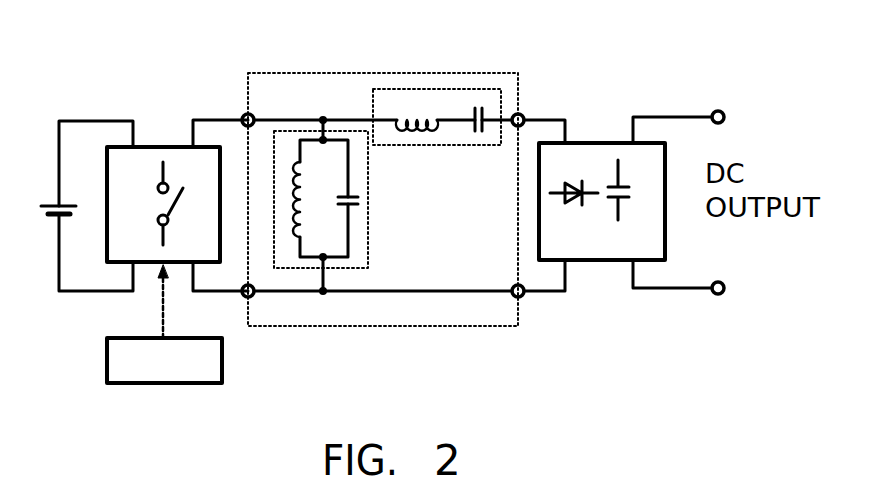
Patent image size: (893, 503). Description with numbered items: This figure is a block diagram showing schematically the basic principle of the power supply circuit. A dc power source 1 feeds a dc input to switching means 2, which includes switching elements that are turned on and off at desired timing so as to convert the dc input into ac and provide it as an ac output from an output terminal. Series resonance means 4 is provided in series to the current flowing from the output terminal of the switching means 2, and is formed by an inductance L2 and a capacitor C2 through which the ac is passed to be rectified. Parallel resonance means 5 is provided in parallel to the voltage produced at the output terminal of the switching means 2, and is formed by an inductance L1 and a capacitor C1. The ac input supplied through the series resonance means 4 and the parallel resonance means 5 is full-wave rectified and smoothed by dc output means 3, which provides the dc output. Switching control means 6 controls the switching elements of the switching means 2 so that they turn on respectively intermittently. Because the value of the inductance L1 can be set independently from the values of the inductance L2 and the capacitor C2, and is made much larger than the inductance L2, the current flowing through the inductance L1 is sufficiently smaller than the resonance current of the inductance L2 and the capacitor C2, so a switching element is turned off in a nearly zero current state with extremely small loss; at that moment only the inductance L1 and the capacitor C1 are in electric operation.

The dc power source 1 is at (50, 216).
The switching means 2 is at (175, 147).
The rectifier circuit 3 is at (605, 260).
The series resonance means 4 is at (396, 109).
The parallel resonance means 5 is at (363, 205).
The switching control means 6 is at (223, 357).
The inductance L1 is at (308, 212).
The capacitor C1 is at (352, 195).
The inductance L2 is at (413, 115).
The capacitor C2 is at (480, 105).